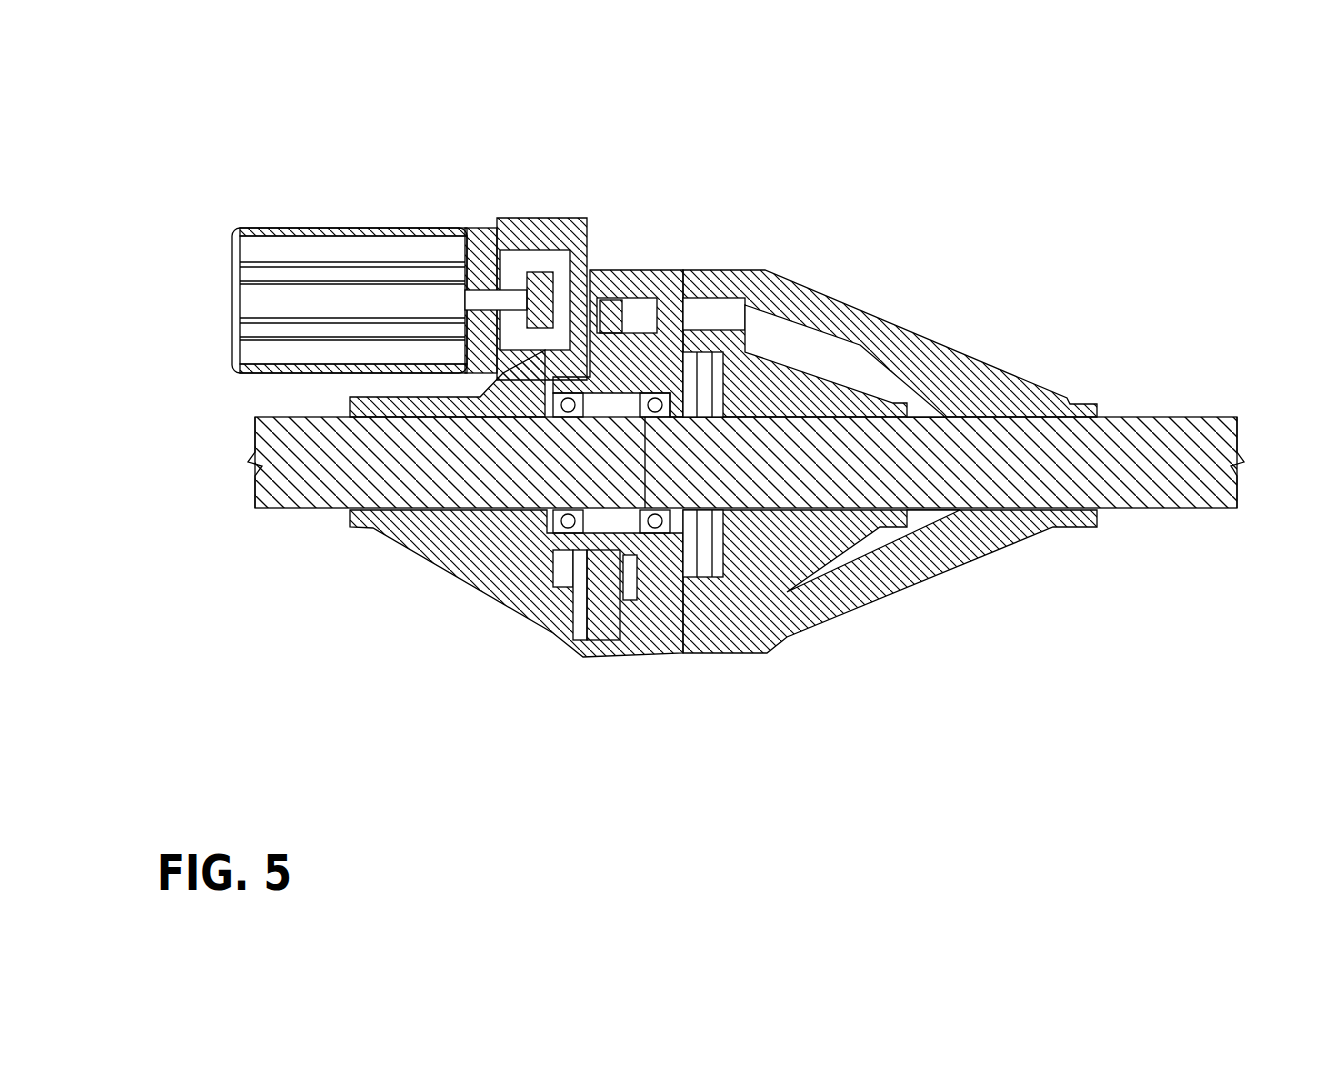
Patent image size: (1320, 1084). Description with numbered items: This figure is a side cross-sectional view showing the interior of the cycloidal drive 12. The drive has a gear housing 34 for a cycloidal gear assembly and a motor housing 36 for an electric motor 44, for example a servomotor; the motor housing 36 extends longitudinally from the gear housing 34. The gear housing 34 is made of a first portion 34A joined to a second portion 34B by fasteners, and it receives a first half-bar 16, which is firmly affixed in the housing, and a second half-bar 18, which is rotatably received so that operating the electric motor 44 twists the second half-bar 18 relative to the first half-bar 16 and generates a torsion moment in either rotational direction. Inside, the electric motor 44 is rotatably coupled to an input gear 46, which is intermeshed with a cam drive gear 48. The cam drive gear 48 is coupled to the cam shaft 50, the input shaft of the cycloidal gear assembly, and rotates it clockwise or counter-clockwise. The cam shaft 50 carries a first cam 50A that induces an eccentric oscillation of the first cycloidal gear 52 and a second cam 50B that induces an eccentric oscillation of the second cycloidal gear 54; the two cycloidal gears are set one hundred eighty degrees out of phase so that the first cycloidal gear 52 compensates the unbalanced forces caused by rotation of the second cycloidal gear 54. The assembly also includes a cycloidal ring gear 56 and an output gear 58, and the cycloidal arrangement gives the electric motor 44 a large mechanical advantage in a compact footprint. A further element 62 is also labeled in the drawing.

The cycloidal drive 12 is at (978, 155).
The first half-bar 16 is at (285, 510).
The second half-bar 18 is at (1143, 417).
The gear housing 34 is at (1085, 745).
The first portion 34A is at (467, 580).
The second portion 34B is at (878, 598).
The motor housing 36 is at (232, 186).
The electric motor 44 is at (245, 300).
The input gear 46 is at (590, 258).
The cam drive gear 48 is at (555, 565).
The cam shaft 50 is at (580, 600).
The first cam 50A is at (607, 360).
The second cam 50B is at (640, 565).
The first cycloidal gear 52 is at (620, 345).
The second cycloidal gear 54 is at (745, 355).
The cycloidal ring gear 56 is at (635, 335).
The output gear 58 is at (790, 555).
The retaining ring 62 is at (690, 345).